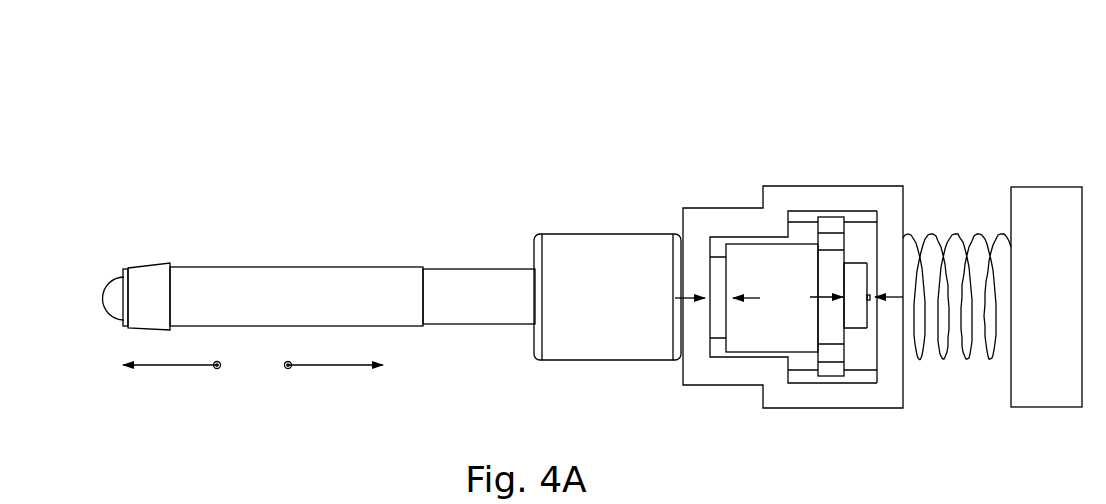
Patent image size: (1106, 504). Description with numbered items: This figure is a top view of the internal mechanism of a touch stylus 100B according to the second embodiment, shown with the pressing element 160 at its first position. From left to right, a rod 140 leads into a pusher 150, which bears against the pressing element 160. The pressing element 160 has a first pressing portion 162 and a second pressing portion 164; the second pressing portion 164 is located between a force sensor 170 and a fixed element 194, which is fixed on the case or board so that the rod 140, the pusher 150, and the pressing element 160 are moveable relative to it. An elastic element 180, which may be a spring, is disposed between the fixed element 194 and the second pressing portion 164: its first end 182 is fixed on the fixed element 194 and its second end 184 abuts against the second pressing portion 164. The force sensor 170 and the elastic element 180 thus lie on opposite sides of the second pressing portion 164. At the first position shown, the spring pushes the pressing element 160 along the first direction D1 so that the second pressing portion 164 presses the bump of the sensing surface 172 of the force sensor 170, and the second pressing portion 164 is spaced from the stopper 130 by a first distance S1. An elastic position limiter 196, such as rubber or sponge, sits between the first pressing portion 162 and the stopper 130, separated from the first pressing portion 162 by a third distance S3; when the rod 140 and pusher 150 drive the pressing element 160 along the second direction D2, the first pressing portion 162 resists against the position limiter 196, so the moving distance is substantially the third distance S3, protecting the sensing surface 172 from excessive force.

The touch stylus 100B is at (87, 74).
The rod 140 is at (290, 290).
The pusher 150 is at (604, 265).
The pressing element 160 is at (747, 92).
The first pressing portion 162 is at (696, 290).
The second pressing portion 164 is at (888, 283).
The position limiter 196 is at (737, 343).
The stopper 130 is at (826, 333).
The force sensor 170 is at (857, 320).
The sensing surface 172 is at (866, 323).
The elastic element 180 is at (888, 92).
The first end 182 is at (1005, 287).
The second end 184 is at (908, 230).
The fixed element 194 is at (1053, 218).
The first distance S1 is at (868, 292).
The third distance S3 is at (714, 302).
The first direction D1 is at (167, 365).
The second direction D2 is at (333, 365).